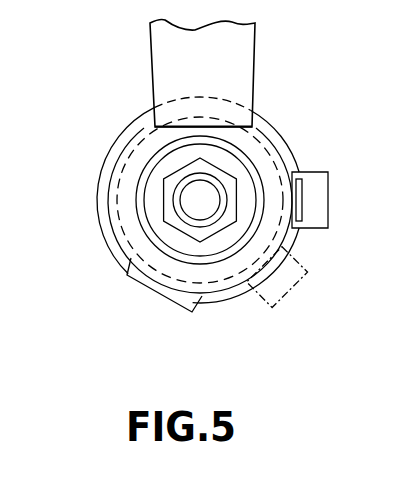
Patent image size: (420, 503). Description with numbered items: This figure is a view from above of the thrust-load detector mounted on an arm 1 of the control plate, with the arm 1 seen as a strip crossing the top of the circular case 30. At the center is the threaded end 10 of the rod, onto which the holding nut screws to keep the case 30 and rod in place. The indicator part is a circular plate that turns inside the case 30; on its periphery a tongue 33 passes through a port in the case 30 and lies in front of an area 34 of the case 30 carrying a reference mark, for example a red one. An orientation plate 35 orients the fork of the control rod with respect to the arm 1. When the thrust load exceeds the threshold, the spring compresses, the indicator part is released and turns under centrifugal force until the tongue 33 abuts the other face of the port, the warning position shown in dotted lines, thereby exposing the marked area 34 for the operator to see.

The arm 1 is at (159, 57).
The threaded end 10 is at (191, 197).
The case 30 is at (267, 137).
The tongue 33 is at (322, 203).
The area 34 is at (300, 182).
The orientation plate 35 is at (126, 276).